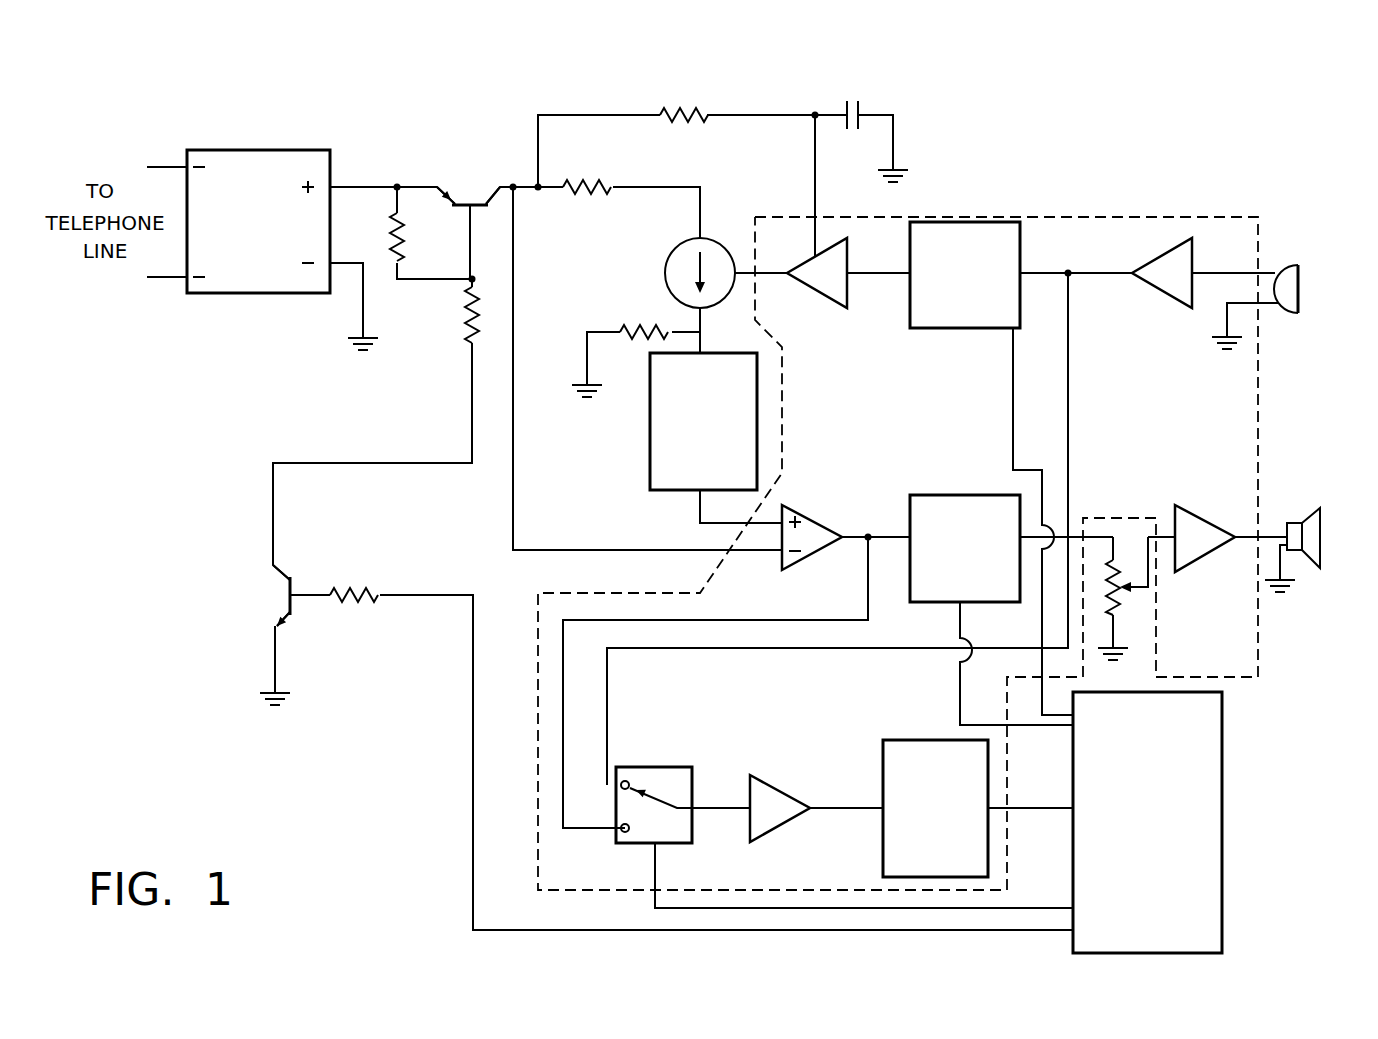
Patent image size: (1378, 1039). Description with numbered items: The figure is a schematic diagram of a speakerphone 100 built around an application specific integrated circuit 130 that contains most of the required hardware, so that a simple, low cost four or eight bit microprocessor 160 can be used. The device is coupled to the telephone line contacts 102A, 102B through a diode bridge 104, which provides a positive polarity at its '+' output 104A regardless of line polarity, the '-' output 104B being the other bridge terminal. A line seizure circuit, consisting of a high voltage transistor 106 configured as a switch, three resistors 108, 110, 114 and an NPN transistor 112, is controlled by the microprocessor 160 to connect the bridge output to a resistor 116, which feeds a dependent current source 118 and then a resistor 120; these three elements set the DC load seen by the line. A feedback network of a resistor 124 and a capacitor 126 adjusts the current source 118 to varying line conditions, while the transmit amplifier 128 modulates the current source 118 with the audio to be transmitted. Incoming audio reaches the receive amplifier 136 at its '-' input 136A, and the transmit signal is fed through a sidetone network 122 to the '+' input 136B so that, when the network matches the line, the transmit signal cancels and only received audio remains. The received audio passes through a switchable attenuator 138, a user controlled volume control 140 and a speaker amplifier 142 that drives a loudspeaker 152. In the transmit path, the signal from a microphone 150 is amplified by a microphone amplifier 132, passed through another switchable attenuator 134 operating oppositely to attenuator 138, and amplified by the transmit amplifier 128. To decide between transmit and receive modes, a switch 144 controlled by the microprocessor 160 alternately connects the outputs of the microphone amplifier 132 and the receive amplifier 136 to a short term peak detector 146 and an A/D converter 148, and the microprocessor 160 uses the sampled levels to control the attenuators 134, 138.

The speakerphone 100 is at (976, 148).
The telephone line contact 102A is at (163, 166).
The telephone line contact 102B is at (165, 278).
The diode bridge 104 is at (208, 150).
The '+' output of the bridge 104A is at (351, 187).
The '-' output of the bridge 104B is at (350, 266).
The high voltage transistor 106 is at (467, 197).
The resistor 108 is at (422, 237).
The resistor 110 is at (465, 292).
The NPN transistor 112 is at (286, 597).
The resistor 114 is at (348, 587).
The resistor 116 is at (588, 177).
The dependent current source 118 is at (665, 273).
The resistor 120 is at (642, 327).
The sidetone network 122 is at (650, 428).
The resistor 124 is at (665, 107).
The capacitor 126 is at (843, 108).
The transmit amplifier 128 is at (815, 293).
The application specific integrated circuit 130 is at (1057, 215).
The microphone amplifier 132 is at (1163, 260).
The switchable attenuator 134 is at (953, 332).
The receive amplifier 136 is at (837, 523).
The '-' input of the receive amplifier 136A is at (785, 575).
The '+' input of the receive amplifier 136B is at (784, 502).
The switchable attenuator 138 is at (920, 495).
The volume control 140 is at (1120, 590).
The speaker amplifier 142 is at (1190, 568).
The switch 144 is at (637, 767).
The short term peak detector 146 is at (763, 775).
The A/D converter 148 is at (907, 740).
The microphone 150 is at (1293, 263).
The loudspeaker 152 is at (1288, 522).
The microprocessor 160 is at (1130, 774).